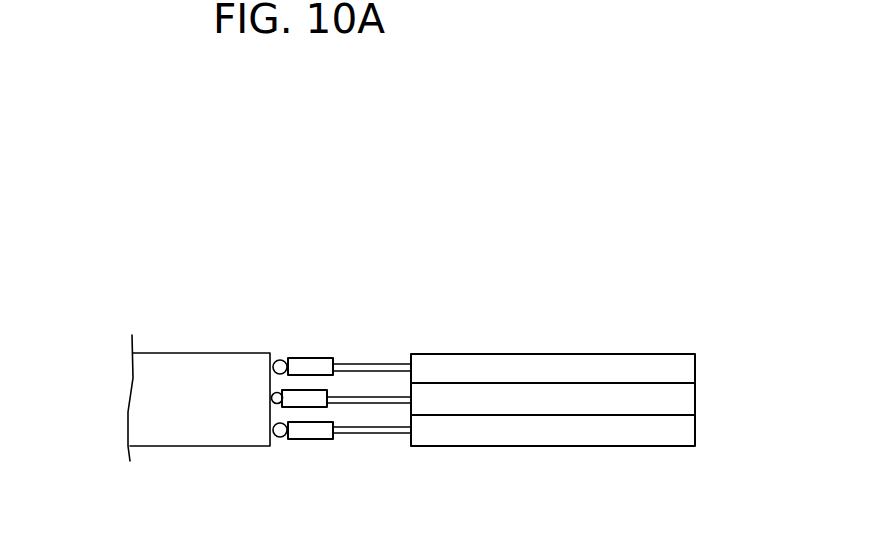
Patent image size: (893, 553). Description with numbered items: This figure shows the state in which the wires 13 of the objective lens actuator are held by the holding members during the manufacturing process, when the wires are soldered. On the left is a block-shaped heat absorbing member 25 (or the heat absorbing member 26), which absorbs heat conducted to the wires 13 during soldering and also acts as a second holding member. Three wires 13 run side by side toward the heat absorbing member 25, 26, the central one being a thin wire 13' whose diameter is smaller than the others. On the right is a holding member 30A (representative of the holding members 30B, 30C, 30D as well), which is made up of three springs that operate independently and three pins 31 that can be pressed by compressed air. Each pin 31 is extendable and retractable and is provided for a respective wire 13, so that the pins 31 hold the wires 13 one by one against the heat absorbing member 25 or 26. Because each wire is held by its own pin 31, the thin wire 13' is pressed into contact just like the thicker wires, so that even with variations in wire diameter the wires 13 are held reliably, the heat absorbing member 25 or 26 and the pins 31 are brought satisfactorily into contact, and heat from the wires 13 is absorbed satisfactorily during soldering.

The heat absorbing member 25 is at (161, 349).
The heat absorbing member 26 is at (152, 364).
The wire 13 is at (264, 389).
The thin wire 13' is at (228, 321).
The pin 31 is at (305, 362).
The holding member 30A is at (578, 359).
The holding member 30B is at (553, 400).
The holding member 30C is at (553, 400).
The holding member 30D is at (492, 339).